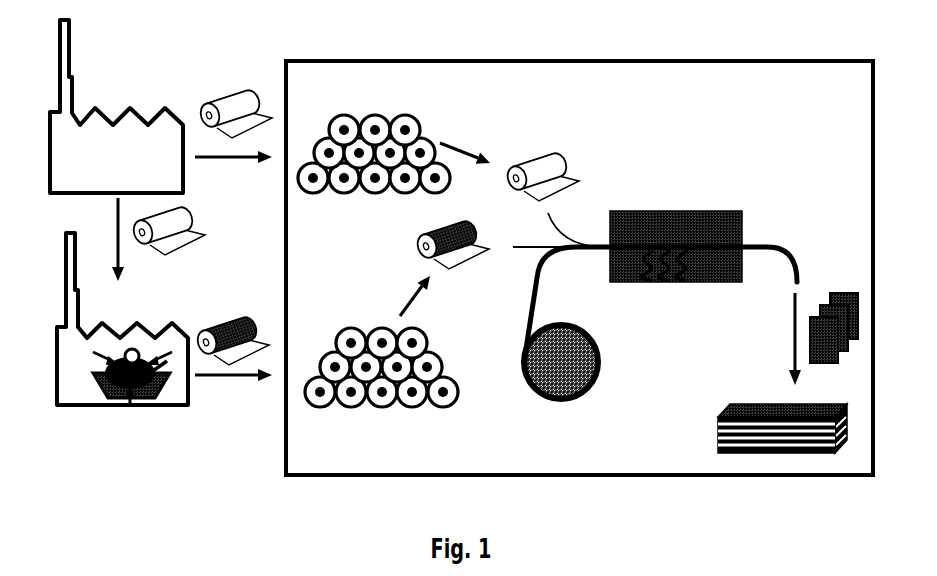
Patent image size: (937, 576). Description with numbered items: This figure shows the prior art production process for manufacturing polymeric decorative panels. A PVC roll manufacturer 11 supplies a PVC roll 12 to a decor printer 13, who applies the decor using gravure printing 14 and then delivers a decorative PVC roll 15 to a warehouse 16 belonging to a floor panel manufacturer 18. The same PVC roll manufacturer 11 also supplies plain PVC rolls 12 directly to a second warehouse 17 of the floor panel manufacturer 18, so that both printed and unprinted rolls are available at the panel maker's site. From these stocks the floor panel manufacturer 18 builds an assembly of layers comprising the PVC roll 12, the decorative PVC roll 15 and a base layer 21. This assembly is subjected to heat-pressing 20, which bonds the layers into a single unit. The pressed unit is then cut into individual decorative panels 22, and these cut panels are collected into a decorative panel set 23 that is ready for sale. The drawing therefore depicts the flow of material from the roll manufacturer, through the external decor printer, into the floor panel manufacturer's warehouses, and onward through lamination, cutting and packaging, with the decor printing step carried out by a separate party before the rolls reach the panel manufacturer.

The PVC roll manufacturer 11 is at (116, 106).
The PVC roll 12 is at (341, 184).
The decor printer 13 is at (127, 381).
The gravure printing 14 is at (130, 405).
The decorative PVC roll 15 is at (397, 316).
The warehouse 16 is at (381, 341).
The warehouse 17 is at (374, 131).
The floor panel manufacturer 18 is at (488, 61).
The heat-pressing 20 is at (676, 227).
The base layer 21 is at (658, 343).
The decorative panel 22 is at (804, 339).
The decorative panel set 23 is at (757, 428).